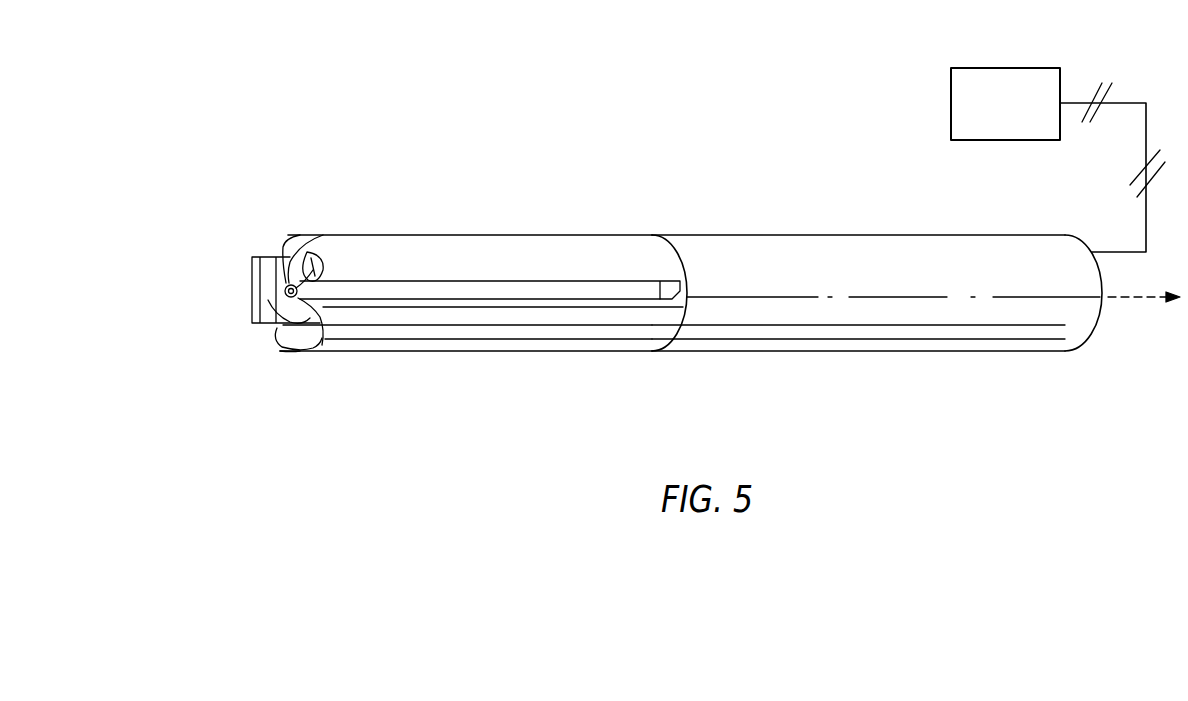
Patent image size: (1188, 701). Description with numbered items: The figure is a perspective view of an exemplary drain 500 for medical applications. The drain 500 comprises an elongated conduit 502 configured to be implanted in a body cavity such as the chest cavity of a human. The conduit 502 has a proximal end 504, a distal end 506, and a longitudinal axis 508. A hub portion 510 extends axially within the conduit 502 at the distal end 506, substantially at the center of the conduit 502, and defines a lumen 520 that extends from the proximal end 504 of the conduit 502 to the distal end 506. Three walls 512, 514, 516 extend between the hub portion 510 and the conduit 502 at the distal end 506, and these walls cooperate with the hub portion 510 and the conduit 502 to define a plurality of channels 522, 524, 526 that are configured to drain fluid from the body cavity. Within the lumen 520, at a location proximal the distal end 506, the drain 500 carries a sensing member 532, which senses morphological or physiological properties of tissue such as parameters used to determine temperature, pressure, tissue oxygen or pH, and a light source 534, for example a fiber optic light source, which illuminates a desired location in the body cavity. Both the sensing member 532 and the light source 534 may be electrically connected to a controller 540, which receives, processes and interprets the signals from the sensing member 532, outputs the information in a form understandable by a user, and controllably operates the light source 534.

The drain 500 is at (195, 195).
The elongated conduit 502 is at (652, 358).
The proximal end 504 is at (1045, 360).
The distal end 506 is at (291, 358).
The longitudinal axis 508 is at (1135, 298).
The hub portion 510 is at (264, 279).
The wall 512 is at (290, 262).
The wall 514 is at (270, 308).
The wall 516 is at (319, 330).
The lumen 520 is at (295, 289).
The channel 522 is at (308, 258).
The channel 524 is at (265, 278).
The channel 526 is at (280, 328).
The sensing member 532 is at (284, 289).
The light source 534 is at (282, 297).
The controller 540 is at (990, 112).